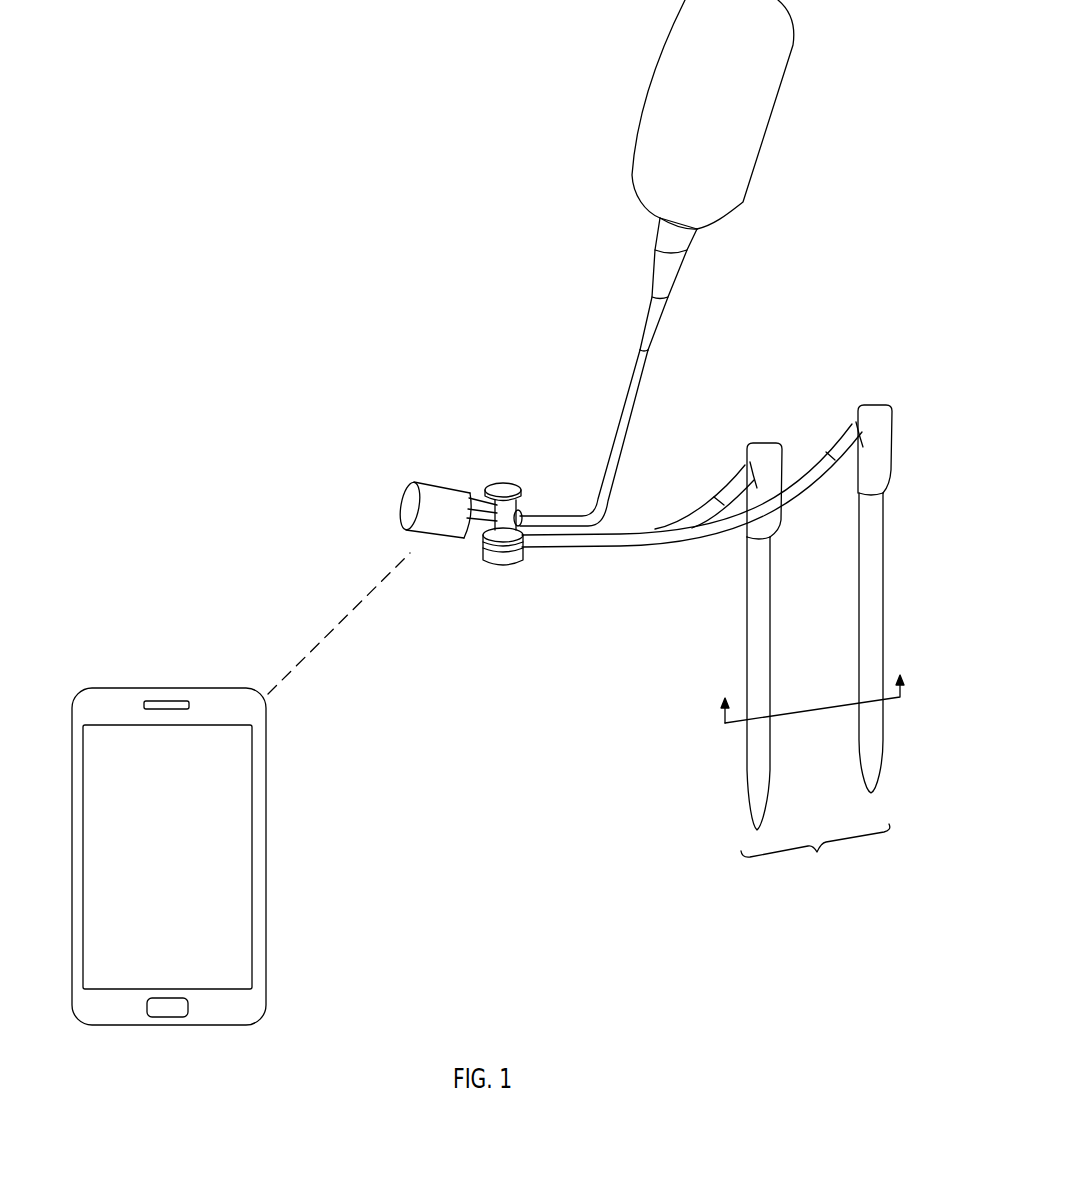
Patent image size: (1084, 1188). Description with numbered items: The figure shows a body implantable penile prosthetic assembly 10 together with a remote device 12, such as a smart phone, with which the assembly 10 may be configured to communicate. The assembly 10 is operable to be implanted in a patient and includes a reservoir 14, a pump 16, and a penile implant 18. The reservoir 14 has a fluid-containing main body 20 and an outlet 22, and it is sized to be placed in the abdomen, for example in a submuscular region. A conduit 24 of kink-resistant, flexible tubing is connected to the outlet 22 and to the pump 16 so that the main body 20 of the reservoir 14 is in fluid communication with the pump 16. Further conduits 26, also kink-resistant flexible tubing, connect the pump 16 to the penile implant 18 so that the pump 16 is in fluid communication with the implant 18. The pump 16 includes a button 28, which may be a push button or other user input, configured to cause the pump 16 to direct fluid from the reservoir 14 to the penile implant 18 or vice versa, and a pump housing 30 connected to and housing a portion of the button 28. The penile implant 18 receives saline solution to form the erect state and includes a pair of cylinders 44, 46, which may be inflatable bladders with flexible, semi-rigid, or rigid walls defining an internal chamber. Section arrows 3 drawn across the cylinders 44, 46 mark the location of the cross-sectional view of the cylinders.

The penile prosthetic assembly 10 is at (620, 712).
The remote device 12 is at (98, 688).
The reservoir 14 is at (692, 175).
The pump 16 is at (467, 530).
The penile implant 18 is at (819, 651).
The main body 20 is at (763, 113).
The outlet 22 is at (655, 268).
The conduit 24 is at (622, 428).
The conduit 26 is at (670, 538).
The button 28 is at (476, 570).
The pump housing 30 is at (435, 492).
The cylinder 44 is at (762, 648).
The cylinder 46 is at (872, 645).
The section line 3- 3 is at (809, 691).